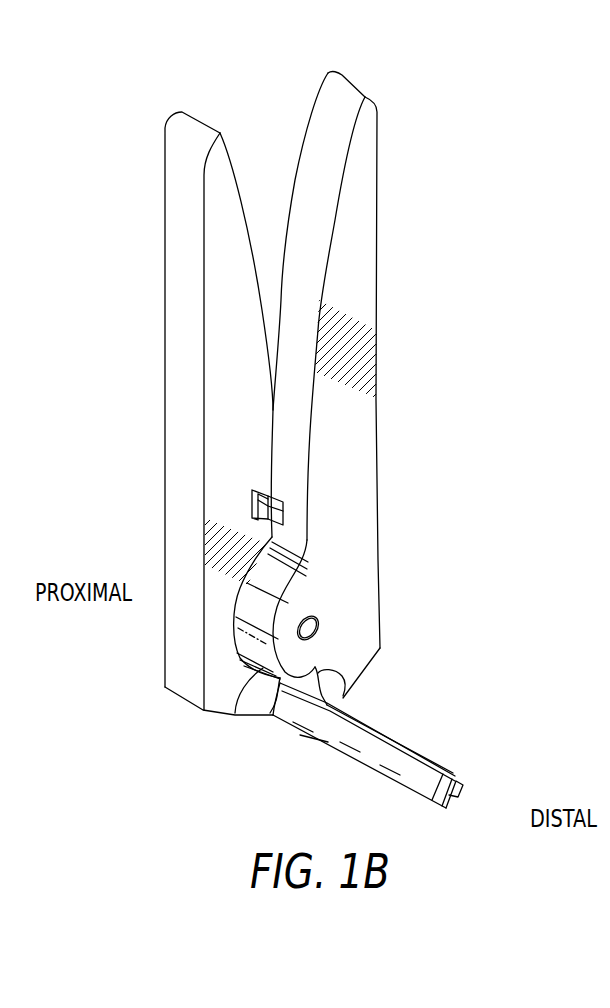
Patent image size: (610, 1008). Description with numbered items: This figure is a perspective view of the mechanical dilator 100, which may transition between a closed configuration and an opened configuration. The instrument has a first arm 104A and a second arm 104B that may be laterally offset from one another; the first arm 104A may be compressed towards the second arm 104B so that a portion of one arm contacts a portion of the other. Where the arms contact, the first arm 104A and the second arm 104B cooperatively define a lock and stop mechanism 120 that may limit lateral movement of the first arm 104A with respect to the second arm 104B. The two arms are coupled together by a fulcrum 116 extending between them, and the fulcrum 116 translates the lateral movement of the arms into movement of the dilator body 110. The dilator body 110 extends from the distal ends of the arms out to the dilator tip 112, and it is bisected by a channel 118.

The mechanical dilator 100 is at (256, 100).
The first arm 104A is at (183, 167).
The second arm 104B is at (349, 88).
The dilator body 110 is at (316, 785).
The dilator tip 112 is at (452, 778).
The fulcrum 116 is at (320, 612).
The channel 118 is at (466, 811).
The lock and stop mechanism 120 is at (252, 513).